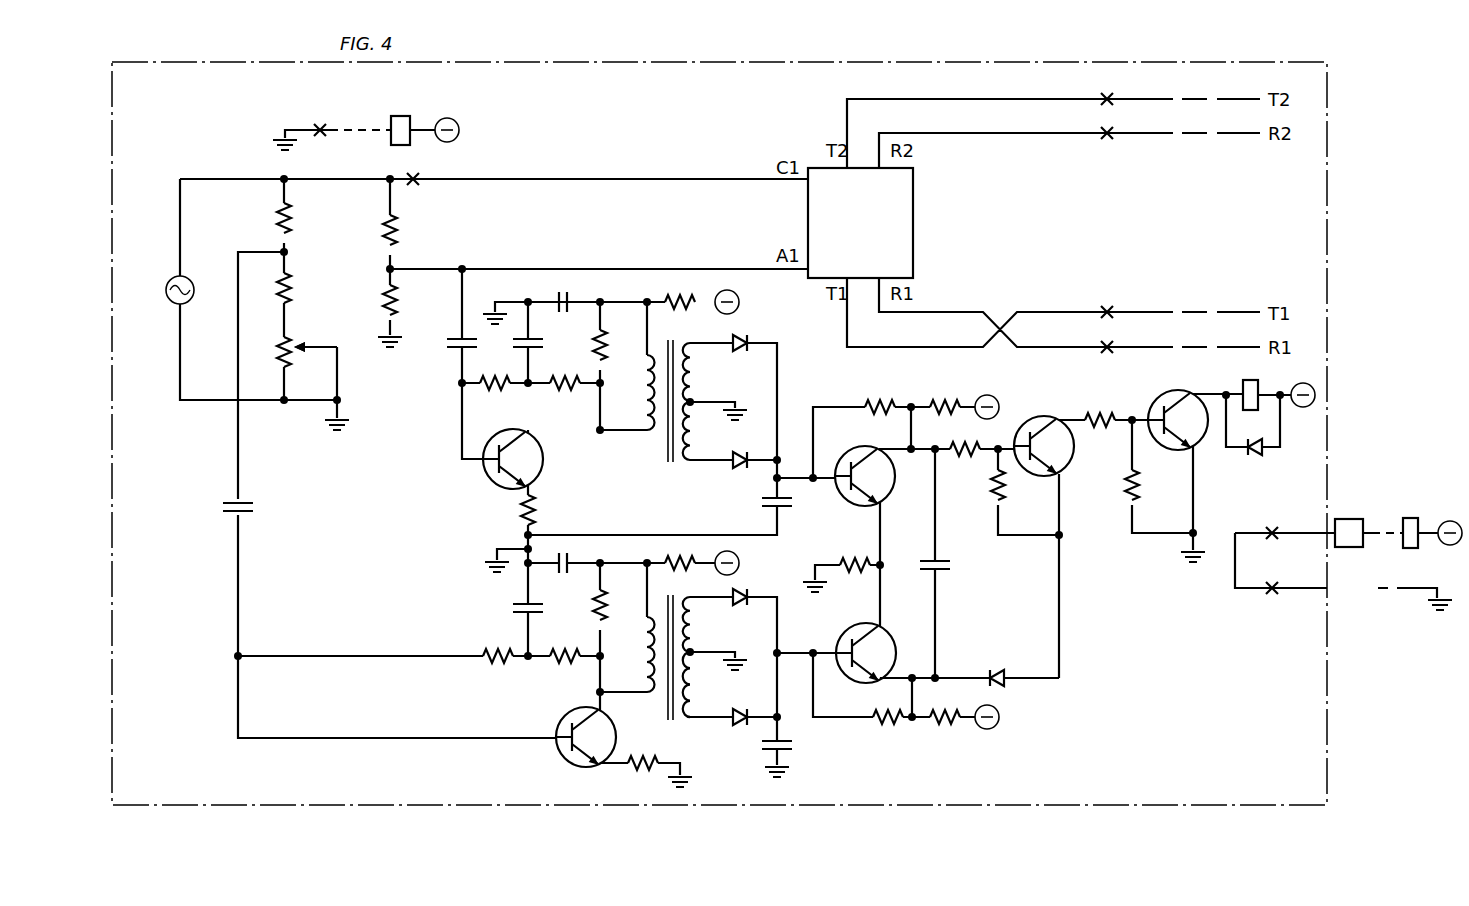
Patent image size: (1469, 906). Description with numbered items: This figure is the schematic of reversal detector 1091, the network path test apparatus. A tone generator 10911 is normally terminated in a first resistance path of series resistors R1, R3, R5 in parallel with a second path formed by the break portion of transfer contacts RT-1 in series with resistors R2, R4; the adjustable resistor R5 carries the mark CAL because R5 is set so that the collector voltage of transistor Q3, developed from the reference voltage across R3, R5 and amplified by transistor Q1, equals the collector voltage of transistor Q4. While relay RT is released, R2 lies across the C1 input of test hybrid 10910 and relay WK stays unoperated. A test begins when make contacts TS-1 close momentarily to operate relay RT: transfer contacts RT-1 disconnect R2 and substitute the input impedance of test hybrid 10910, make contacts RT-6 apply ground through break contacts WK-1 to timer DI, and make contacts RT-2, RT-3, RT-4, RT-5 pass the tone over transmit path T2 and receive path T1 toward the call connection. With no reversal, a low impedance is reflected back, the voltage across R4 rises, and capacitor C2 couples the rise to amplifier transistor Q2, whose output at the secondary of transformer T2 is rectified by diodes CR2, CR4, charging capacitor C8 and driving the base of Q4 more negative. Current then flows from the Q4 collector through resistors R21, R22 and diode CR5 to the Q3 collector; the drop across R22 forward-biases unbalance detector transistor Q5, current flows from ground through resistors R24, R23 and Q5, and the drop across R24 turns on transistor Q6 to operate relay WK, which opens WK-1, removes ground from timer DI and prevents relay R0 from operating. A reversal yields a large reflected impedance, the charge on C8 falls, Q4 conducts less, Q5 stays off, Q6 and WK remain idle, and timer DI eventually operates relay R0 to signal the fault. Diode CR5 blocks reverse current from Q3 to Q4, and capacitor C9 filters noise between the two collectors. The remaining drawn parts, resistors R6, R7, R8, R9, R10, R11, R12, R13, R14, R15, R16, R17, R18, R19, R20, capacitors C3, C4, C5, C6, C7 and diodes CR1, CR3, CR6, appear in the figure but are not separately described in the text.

The reversal detector 1091 is at (650, 62).
The test hybrid 10910 is at (913, 228).
The tone generator 10911 is at (172, 303).
The make contacts TS-1 is at (319, 117).
The relay RT is at (400, 121).
The transfer contacts RT-1 is at (430, 190).
The make contacts RT-2 is at (1104, 88).
The make contacts RT-3 is at (1104, 148).
The make contacts RT-4 is at (1104, 362).
The make contacts RT-5 is at (1104, 301).
The make contacts RT-6 is at (1269, 578).
The relay WK is at (1251, 382).
The break contacts WK-1 is at (1273, 522).
The timer DI is at (1349, 533).
The relay R0 is at (1408, 521).
The calibration adjustment CAL is at (300, 337).
The resistor R1 is at (270, 219).
The resistor R2 is at (407, 231).
The resistor R3 is at (299, 288).
The resistor R4 is at (407, 300).
The resistor R5 is at (268, 352).
The resistor R6 is at (494, 396).
The resistor R7 is at (496, 671).
The resistor R8 is at (564, 396).
The resistor R9 is at (565, 671).
The resistor R10 is at (580, 345).
The resistor R11 is at (583, 605).
The resistor R12 is at (506, 510).
The resistor R13 is at (642, 778).
The resistor R14 is at (682, 296).
The resistor R15 is at (684, 558).
The resistor R16 is at (879, 392).
The resistor R17 is at (887, 732).
The resistor R18 is at (945, 392).
The resistor R19 is at (945, 732).
The resistor R20 is at (851, 552).
The resistor R21 is at (965, 456).
The resistor R22 is at (989, 498).
The resistor R23 is at (1099, 408).
The resistor R24 is at (1151, 485).
The input lead C1 is at (254, 507).
The capacitor C2 is at (448, 344).
The capacitor C3 is at (514, 609).
The capacitor C4 is at (517, 342).
The capacitor C5 is at (569, 557).
The capacitor C6 is at (566, 294).
The capacitor C7 is at (791, 746).
The capacitor C8 is at (791, 504).
The capacitor C9 is at (949, 566).
The transistor Q1 is at (556, 758).
The amplifier transistor Q2 is at (545, 460).
The transistor Q3 is at (884, 636).
The transistor Q4 is at (888, 497).
The unbalance detector transistor Q5 is at (1068, 470).
The transistor Q6 is at (1156, 396).
The diode CR1 is at (742, 588).
The diode CR2 is at (742, 334).
The diode CR3 is at (727, 729).
The diode CR4 is at (740, 473).
The diode CR5 is at (994, 660).
The diode CR6 is at (1251, 458).
The receive path lead T1 is at (676, 653).
The transformer T2 is at (676, 394).